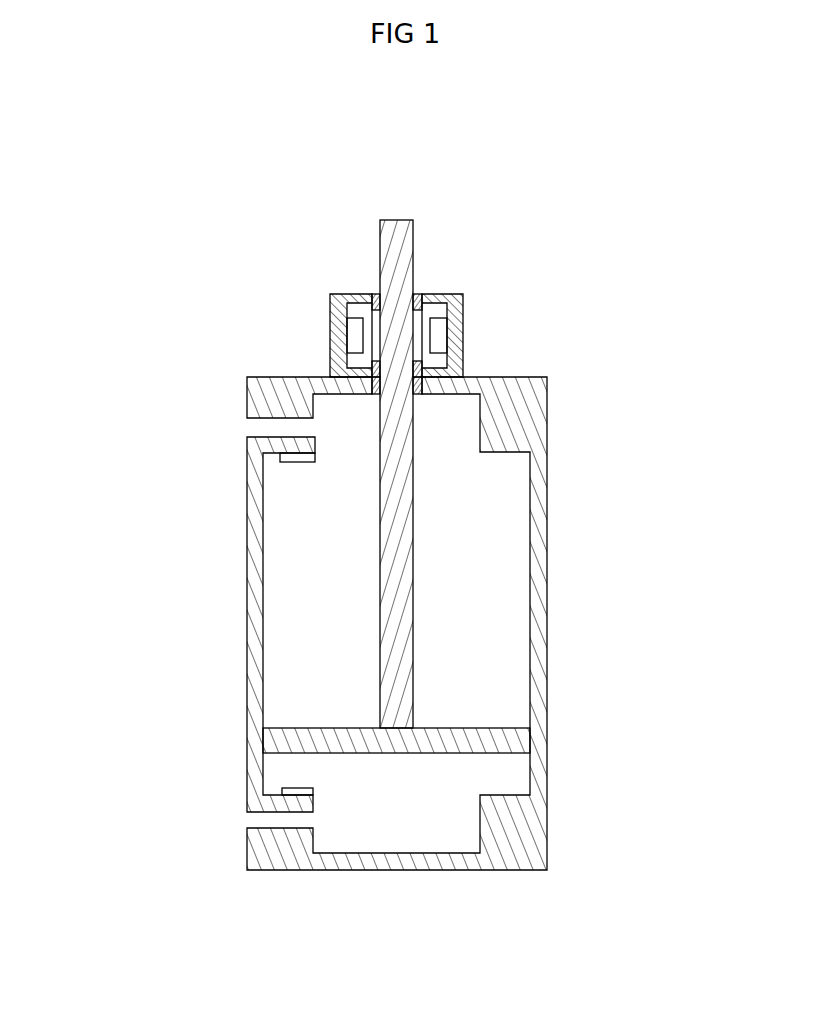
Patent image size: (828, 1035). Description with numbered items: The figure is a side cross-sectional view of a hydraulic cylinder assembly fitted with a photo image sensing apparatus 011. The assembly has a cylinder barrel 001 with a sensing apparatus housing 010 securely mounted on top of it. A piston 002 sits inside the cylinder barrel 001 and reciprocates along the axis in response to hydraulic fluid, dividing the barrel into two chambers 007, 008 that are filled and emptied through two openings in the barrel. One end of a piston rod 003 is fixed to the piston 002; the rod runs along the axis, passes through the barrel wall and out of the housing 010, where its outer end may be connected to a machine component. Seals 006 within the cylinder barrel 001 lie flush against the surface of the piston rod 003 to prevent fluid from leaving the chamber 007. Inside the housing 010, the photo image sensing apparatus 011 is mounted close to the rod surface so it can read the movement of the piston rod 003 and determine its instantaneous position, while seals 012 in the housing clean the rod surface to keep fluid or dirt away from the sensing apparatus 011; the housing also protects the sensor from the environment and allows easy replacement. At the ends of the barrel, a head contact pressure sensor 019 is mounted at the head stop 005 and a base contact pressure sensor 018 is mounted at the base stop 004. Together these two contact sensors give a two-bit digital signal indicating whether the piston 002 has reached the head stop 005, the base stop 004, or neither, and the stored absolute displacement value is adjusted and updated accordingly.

The cylinder barrel 001 is at (537, 662).
The piston 002 is at (497, 747).
The piston rod 003 is at (397, 545).
The base stop 004 is at (290, 805).
The head stop 005 is at (300, 443).
The seals 006 is at (347, 376).
The chamber 007 is at (297, 628).
The chamber 008 is at (372, 837).
The sensing apparatus housing 010 is at (460, 357).
The photo image sensing apparatus 011 is at (356, 335).
The seals 012 is at (376, 300).
The base contact pressure sensor 018 is at (282, 790).
The head contact pressure sensor 019 is at (282, 460).